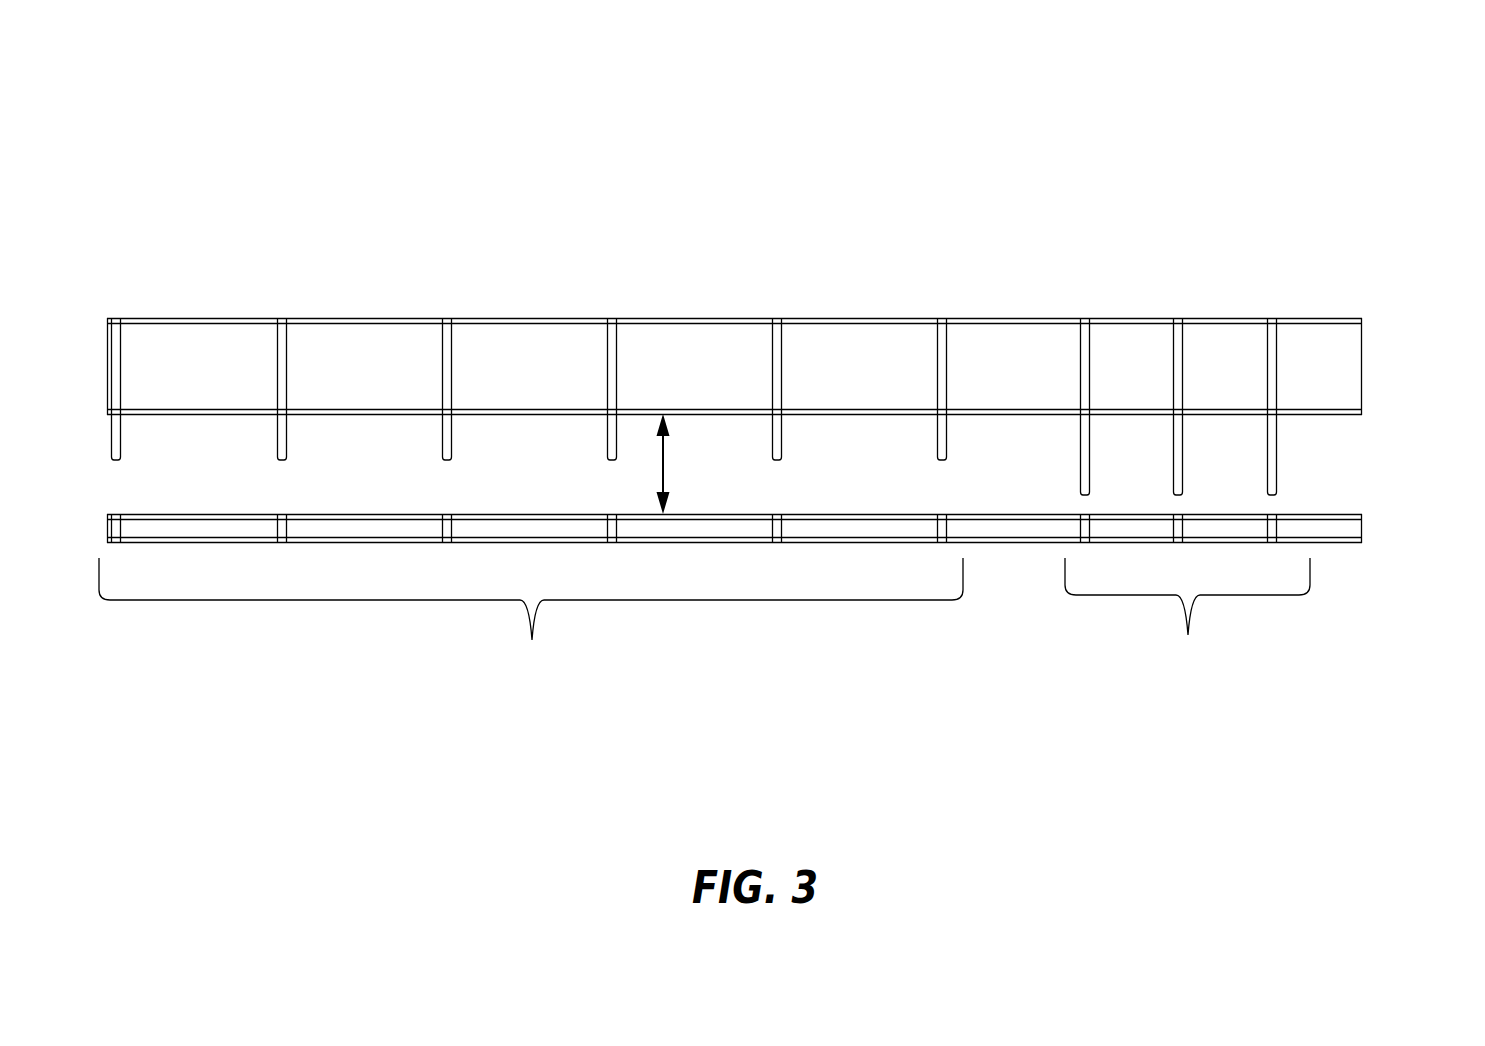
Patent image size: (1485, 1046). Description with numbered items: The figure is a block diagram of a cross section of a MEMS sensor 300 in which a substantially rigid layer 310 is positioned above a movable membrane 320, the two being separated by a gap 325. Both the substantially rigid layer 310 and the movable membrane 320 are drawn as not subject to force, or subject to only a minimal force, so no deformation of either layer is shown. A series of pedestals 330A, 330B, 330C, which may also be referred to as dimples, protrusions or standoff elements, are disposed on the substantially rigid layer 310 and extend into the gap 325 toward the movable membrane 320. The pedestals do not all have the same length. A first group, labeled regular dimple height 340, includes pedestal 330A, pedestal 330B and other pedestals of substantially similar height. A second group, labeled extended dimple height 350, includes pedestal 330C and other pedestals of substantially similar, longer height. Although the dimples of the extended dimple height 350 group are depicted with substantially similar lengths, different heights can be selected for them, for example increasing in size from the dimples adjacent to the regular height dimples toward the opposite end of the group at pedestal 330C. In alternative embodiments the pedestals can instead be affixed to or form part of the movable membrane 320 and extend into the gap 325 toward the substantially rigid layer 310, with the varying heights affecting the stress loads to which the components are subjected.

The MEMS sensor 300 is at (227, 48).
The substantially rigid layer 310 is at (728, 320).
The movable membrane 320 is at (838, 541).
The gap 325 is at (663, 462).
The pedestal 330A is at (450, 437).
The pedestal 330B is at (940, 433).
The pedestal 330C is at (1268, 450).
The regular dimple height 340 is at (531, 640).
The extended dimple height 350 is at (1196, 638).